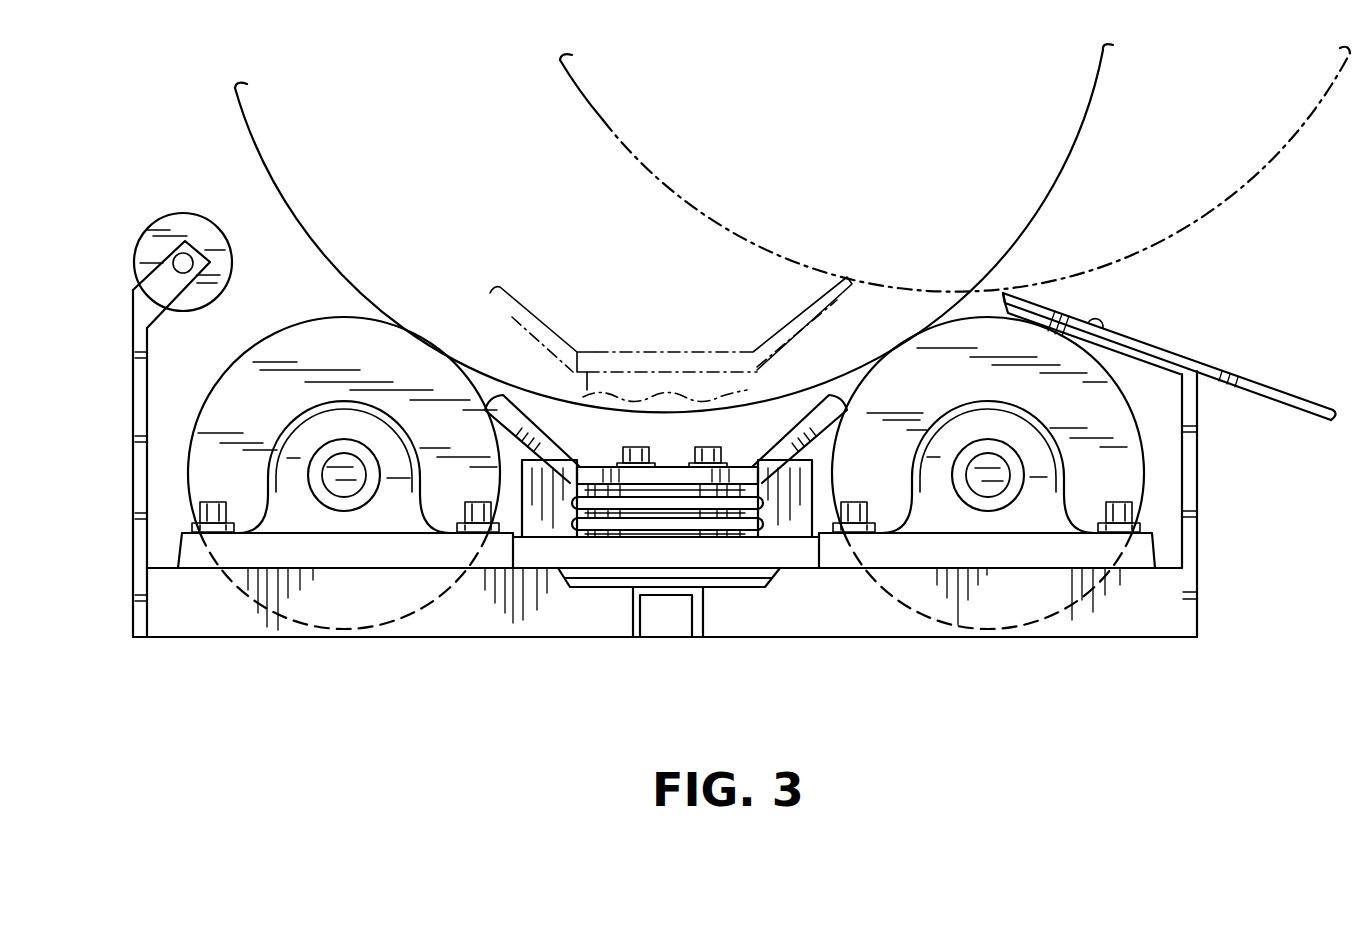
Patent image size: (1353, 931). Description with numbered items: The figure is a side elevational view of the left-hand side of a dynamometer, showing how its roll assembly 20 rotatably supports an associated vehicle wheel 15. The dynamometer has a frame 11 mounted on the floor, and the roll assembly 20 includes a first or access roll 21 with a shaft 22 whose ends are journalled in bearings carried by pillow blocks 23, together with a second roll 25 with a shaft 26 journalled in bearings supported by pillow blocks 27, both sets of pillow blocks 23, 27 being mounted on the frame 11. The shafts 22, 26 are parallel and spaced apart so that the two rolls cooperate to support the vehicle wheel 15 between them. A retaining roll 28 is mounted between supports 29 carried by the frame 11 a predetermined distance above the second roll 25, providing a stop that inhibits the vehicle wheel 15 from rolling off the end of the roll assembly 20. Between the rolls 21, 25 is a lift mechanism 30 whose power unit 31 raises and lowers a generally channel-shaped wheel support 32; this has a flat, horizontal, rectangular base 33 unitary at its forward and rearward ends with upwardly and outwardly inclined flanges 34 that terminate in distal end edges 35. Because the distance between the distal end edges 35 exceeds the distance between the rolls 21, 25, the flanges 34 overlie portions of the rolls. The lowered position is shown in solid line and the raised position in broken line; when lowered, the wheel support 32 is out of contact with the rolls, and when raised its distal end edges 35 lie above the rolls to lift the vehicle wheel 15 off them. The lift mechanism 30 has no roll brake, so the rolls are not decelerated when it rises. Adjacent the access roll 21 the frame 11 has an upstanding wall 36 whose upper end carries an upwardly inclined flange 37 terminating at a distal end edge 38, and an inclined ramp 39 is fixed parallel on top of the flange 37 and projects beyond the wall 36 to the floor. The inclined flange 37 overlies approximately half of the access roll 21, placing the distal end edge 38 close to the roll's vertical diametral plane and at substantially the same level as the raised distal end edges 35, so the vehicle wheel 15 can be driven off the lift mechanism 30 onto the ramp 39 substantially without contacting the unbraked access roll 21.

The frame 11 is at (409, 649).
The vehicle wheel 15 is at (348, 278).
The roll assembly 20 is at (259, 337).
The access roll 21 is at (1145, 466).
The shaft 22 is at (988, 498).
The pillow blocks 23 is at (1147, 553).
The second roll 25 is at (236, 367).
The shaft 26 is at (351, 511).
The pillow blocks 27 is at (192, 560).
The retaining roll 28 is at (231, 262).
The supports 29 is at (133, 410).
The lift mechanism 30 is at (615, 593).
The power unit 31 is at (737, 588).
The wheel support 32 is at (657, 354).
The base 33 is at (670, 467).
The flanges 34 is at (623, 458).
The distal end edges 35 is at (560, 452).
The upstanding wall 36 is at (1198, 520).
The inclined flange 37 is at (1124, 352).
The distal end edge 38 is at (1005, 288).
The inclined ramp 39 is at (1260, 380).